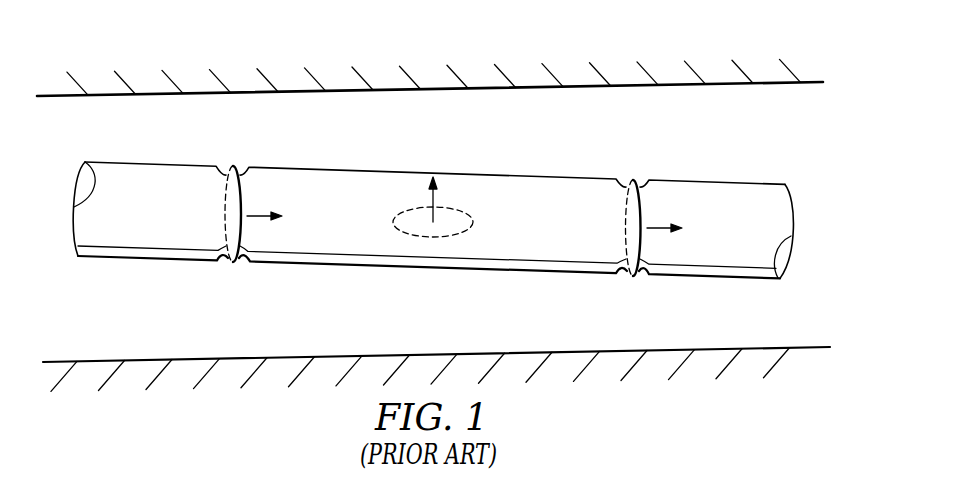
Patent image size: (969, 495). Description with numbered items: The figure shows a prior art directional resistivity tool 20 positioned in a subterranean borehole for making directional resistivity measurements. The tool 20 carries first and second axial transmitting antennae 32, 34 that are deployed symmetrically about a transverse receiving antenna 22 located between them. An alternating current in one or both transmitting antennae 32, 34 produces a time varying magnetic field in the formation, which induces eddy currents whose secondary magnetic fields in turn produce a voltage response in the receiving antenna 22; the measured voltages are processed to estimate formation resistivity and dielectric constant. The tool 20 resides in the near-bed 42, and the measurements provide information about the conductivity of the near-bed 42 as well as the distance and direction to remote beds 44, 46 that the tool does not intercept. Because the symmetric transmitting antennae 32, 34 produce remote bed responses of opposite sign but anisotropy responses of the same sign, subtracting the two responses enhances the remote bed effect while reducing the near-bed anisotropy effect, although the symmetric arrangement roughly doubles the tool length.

The resistivity tool 20 is at (175, 165).
The transverse receiving antenna 22 is at (470, 220).
The first axial transmitting antenna 32 is at (242, 202).
The second axial transmitting antenna 34 is at (642, 217).
The near-bed 42 is at (772, 133).
The remote bed 44 is at (318, 72).
The remote bed 46 is at (304, 409).